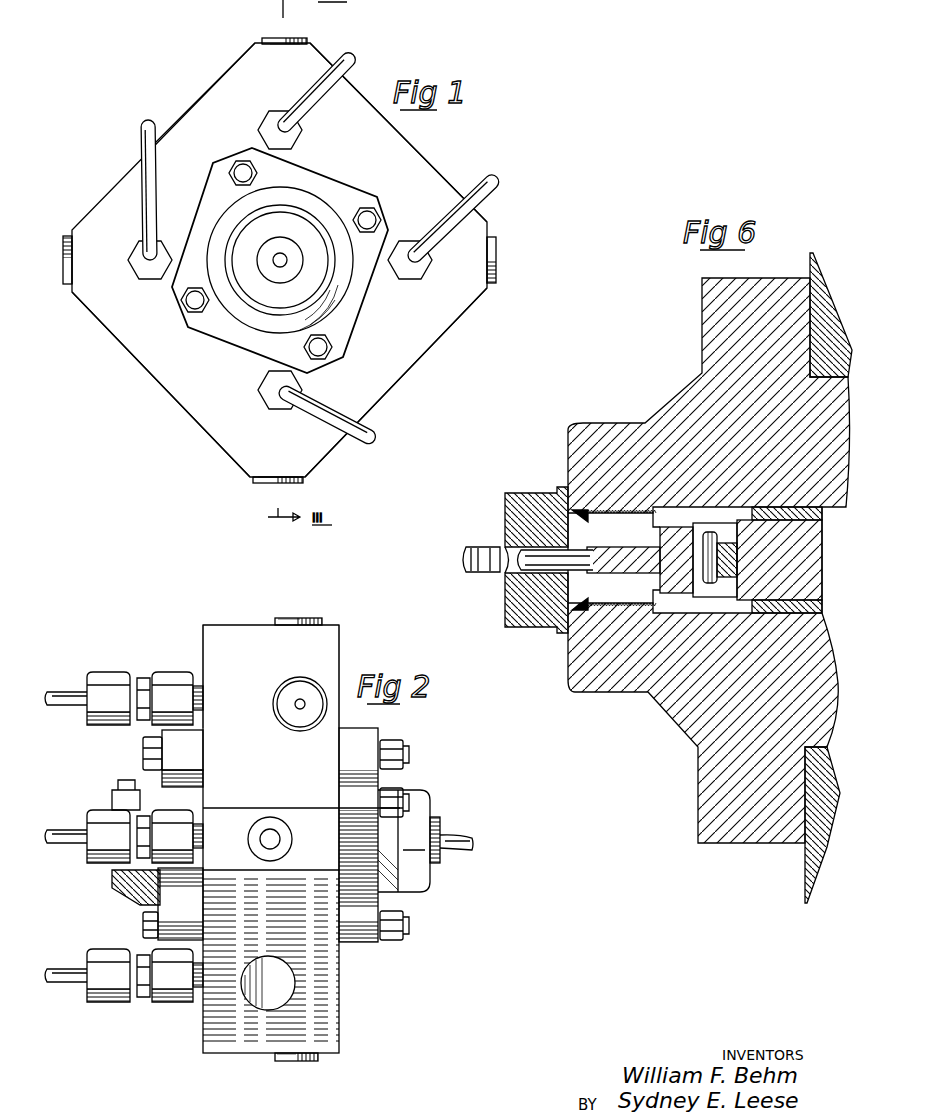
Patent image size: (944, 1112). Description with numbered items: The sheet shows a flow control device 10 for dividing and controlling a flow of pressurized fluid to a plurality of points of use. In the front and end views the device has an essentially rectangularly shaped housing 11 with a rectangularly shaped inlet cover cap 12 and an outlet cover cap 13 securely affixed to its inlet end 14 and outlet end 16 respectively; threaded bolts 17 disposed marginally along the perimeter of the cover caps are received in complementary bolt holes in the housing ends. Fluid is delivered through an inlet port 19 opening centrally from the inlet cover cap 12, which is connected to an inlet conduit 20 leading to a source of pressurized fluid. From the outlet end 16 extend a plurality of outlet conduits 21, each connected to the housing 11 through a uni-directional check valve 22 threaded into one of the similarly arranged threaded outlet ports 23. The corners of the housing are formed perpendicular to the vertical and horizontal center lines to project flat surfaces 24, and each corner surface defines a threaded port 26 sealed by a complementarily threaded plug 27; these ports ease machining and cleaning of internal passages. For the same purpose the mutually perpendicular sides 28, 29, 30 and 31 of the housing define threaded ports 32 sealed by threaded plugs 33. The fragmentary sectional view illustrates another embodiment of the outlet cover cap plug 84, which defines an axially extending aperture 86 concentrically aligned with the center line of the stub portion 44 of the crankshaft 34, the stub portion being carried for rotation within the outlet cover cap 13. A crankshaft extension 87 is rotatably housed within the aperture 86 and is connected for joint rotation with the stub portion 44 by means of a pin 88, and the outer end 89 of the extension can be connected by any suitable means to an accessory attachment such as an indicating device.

In FIG. 1, the flow control device 10 is at (456, 153).
In FIG. 2, the flow control device 10 is at (195, 612).
In FIG. 1, the housing 11 is at (356, 86).
In FIG. 2, the housing 11 is at (243, 623).
In FIG. 2, the inlet cover cap 12 is at (368, 730).
In FIG. 1, the outlet cover cap 13 is at (245, 340).
In FIG. 2, the outlet cover cap 13 is at (148, 897).
In FIG. 6, the outlet cover cap 13 is at (676, 396).
In FIG. 2, the inlet end 14 is at (340, 642).
In FIG. 2, the outlet end 16 is at (202, 645).
In FIG. 1, the threaded bolts 17 is at (238, 173).
In FIG. 2, the threaded bolts 17 is at (143, 754).
In FIG. 2, the inlet port 19 is at (440, 826).
In FIG. 2, the inlet conduit 20 is at (452, 848).
In FIG. 1, the outlet conduits 21 is at (352, 55).
In FIG. 2, the outlet conduits 21 is at (64, 704).
In FIG. 2, the uni-directional check valve 22 is at (170, 674).
In FIG. 2, the threaded outlet ports 23 is at (200, 680).
In FIG. 1, the flat surfaces 24 is at (290, 46).
In FIG. 2, the flat surfaces 24 is at (322, 849).
In FIG. 1, the threaded port 26 is at (268, 38).
In FIG. 2, the threaded port 26 is at (292, 617).
In FIG. 1, the threaded plug 27 is at (300, 40).
In FIG. 2, the threaded plug 27 is at (300, 617).
In FIG. 1, the side 28 is at (402, 143).
In FIG. 2, the side 28 is at (260, 666).
In FIG. 1, the side 29 is at (205, 95).
In FIG. 1, the side 30 is at (165, 390).
In FIG. 1, the side 31 is at (440, 340).
In FIG. 2, the side 31 is at (250, 909).
In FIG. 2, the threaded ports 32 is at (290, 728).
In FIG. 2, the threaded plugs 33 is at (290, 712).
In FIG. 6, the crankshaft 34 is at (812, 536).
In FIG. 6, the stub portion 44 is at (806, 574).
In FIG. 6, the outlet cover cap plug 84 is at (545, 628).
In FIG. 6, the aperture 86 is at (530, 545).
In FIG. 6, the crankshaft extension 87 is at (525, 566).
In FIG. 6, the pin 88 is at (706, 598).
In FIG. 6, the outer end 89 is at (470, 548).